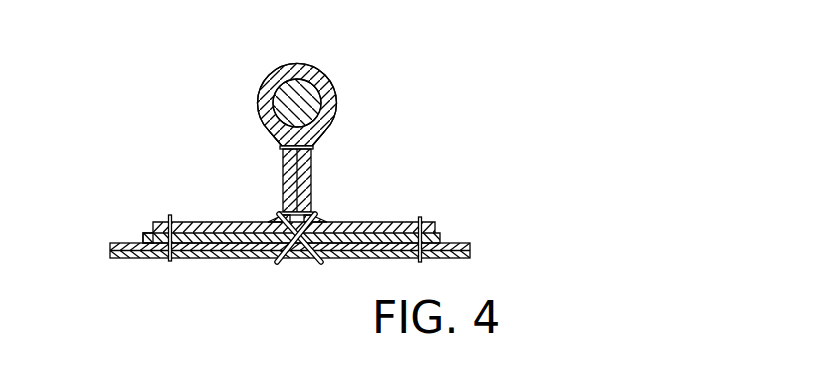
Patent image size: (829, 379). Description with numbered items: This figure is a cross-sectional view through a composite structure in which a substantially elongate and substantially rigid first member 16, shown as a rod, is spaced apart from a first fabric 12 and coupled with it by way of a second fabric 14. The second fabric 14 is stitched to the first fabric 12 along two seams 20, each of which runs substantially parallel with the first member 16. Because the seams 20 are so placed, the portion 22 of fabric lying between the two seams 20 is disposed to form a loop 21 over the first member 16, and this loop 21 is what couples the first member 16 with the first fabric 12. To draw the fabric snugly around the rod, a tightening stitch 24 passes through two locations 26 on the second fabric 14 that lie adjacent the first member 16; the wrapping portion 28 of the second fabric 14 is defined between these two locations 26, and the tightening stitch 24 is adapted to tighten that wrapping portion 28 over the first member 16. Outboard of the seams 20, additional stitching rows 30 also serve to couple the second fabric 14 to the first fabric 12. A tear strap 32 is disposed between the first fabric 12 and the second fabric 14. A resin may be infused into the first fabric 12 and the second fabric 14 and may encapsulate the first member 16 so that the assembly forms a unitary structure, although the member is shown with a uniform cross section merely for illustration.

The first fabric 12 is at (465, 246).
The second fabric 14 is at (388, 222).
The first member 16 is at (310, 98).
The seams 20 is at (273, 222).
The loop 21 is at (260, 100).
The portion 22 is at (282, 175).
The tightening stitch 24 is at (315, 152).
The locations 26 is at (280, 144).
The wrapping portion 28 is at (277, 70).
The stitching rows 30 is at (168, 214).
The tear strap 32 is at (145, 236).